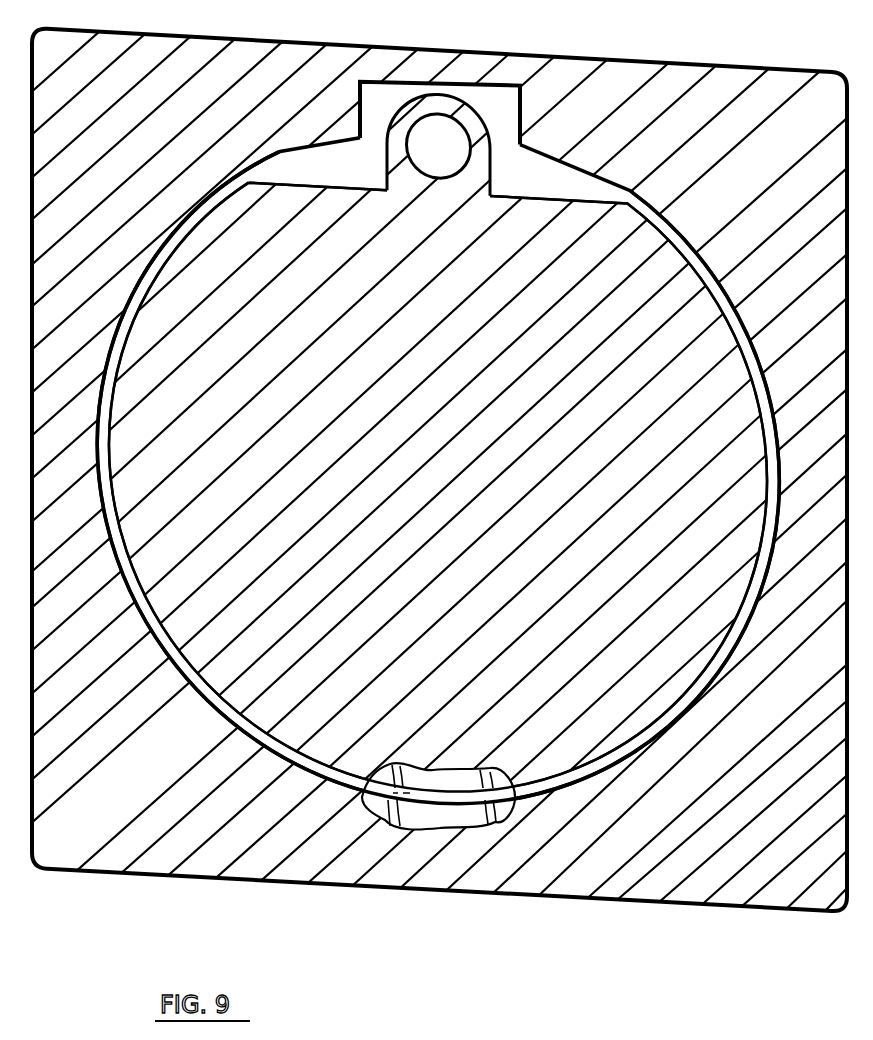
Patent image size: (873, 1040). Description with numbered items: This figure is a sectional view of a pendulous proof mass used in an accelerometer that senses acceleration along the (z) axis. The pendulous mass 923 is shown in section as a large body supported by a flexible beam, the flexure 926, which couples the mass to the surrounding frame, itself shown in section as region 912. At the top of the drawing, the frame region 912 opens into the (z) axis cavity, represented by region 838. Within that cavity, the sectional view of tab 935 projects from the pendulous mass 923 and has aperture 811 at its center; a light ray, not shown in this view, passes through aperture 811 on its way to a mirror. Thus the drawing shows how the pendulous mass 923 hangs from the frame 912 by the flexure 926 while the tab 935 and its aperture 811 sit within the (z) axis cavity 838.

The frame 912 is at (682, 872).
The pendulous mass 923 is at (486, 509).
The sectional view of tab 935 is at (404, 182).
The (z) axis cavity 838 is at (486, 105).
The aperture 811 is at (455, 163).
The flexure 926 is at (445, 778).